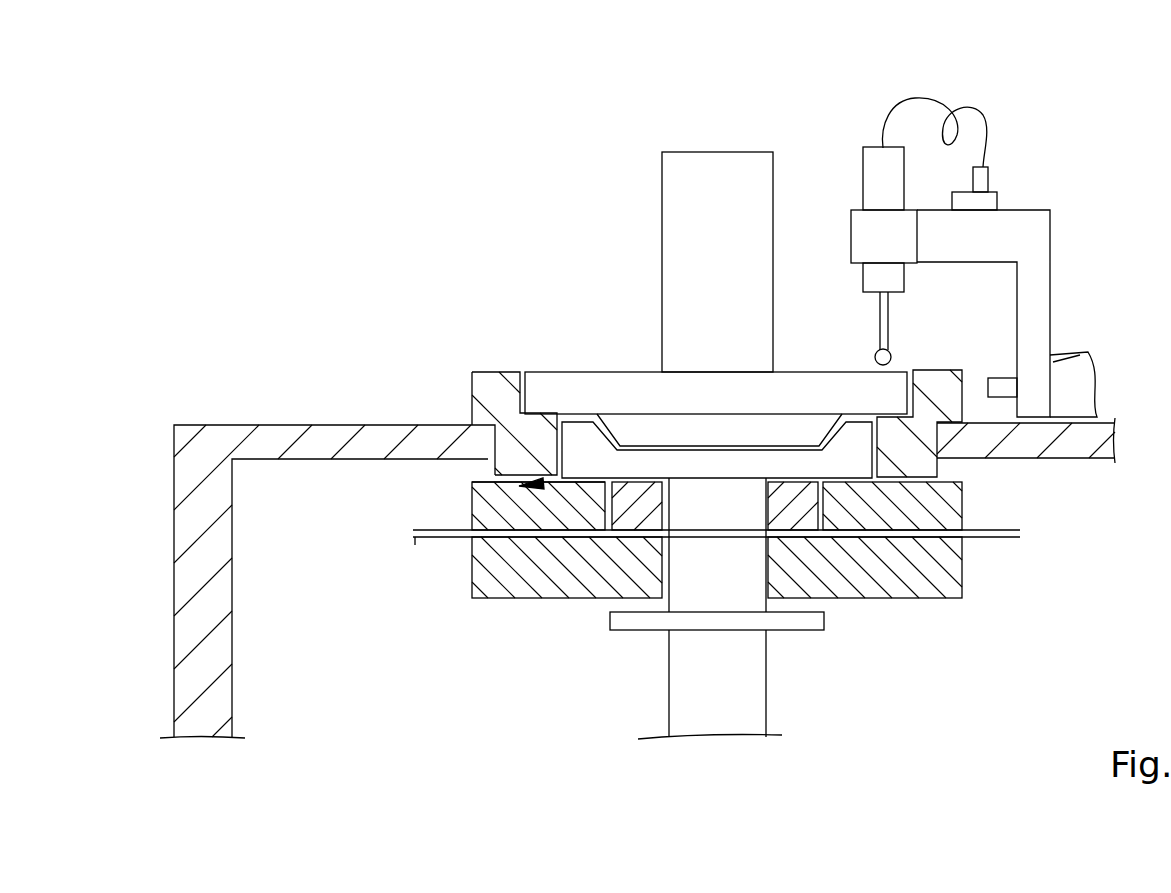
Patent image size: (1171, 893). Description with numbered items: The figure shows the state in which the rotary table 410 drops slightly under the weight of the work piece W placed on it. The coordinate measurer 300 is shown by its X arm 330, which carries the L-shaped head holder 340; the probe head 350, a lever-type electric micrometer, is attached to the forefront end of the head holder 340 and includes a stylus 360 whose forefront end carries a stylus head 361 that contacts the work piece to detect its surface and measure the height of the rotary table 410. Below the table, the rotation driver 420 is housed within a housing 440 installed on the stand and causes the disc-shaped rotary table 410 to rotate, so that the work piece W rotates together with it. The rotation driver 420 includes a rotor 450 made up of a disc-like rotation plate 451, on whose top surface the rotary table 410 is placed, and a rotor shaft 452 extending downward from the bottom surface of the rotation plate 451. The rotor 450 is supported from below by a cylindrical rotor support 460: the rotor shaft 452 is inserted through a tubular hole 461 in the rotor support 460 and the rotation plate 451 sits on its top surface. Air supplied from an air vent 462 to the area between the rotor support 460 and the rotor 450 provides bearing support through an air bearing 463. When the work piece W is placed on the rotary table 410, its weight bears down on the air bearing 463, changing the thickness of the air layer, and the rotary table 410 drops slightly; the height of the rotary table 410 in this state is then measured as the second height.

The coordinate measurer 300 is at (960, 227).
The X arm 330 is at (1065, 360).
The head holder 340 is at (1038, 253).
The probe head 350 is at (868, 170).
The stylus 360 is at (880, 310).
The stylus head 361 is at (893, 355).
The work piece W is at (708, 155).
The rotary table 410 is at (568, 368).
The rotation driver 420 is at (711, 591).
The housing 440 is at (340, 440).
The rotor 450 is at (716, 485).
The rotation plate 451 is at (653, 470).
The rotor shaft 452 is at (682, 497).
The rotor support 460 is at (498, 575).
The tubular hole 461 is at (640, 605).
The air vent 462 is at (418, 540).
The air bearing 463 is at (540, 485).